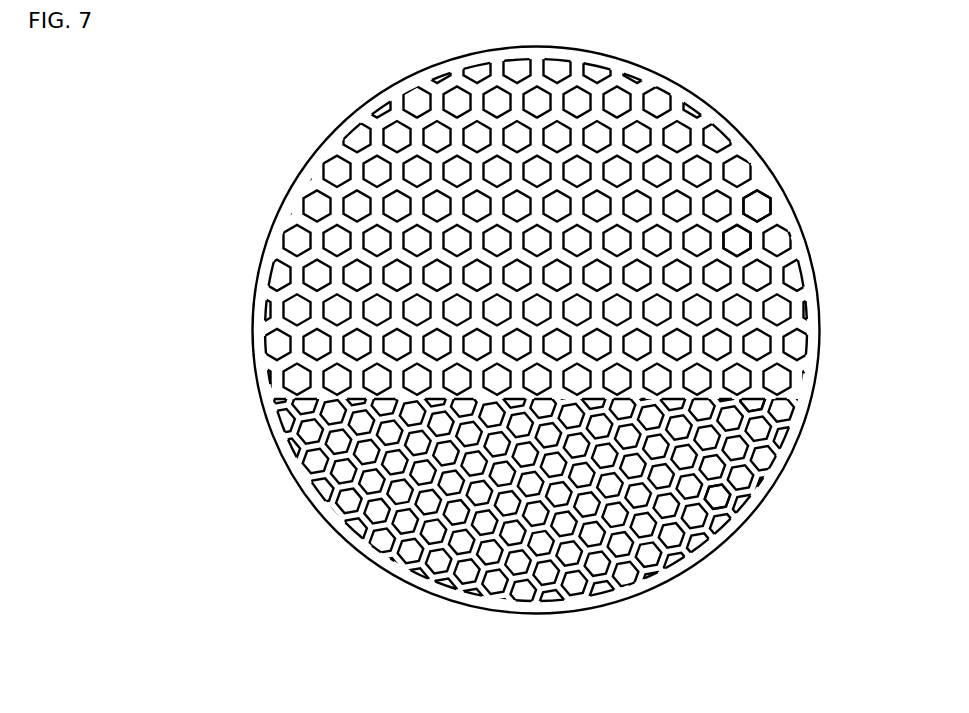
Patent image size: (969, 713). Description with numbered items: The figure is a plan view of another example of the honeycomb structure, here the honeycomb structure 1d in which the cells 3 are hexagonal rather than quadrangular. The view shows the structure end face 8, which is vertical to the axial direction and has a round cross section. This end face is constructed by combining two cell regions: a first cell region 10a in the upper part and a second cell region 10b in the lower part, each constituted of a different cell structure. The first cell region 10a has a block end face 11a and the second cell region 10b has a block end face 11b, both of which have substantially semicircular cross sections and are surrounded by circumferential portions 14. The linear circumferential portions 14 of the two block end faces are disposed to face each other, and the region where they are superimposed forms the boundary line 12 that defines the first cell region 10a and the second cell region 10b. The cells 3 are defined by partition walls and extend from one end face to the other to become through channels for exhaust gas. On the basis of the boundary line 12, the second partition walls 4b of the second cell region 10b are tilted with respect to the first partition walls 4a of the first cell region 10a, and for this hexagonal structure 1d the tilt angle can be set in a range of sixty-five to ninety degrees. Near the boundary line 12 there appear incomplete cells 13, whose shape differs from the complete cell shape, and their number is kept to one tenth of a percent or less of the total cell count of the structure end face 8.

The honeycomb structure 1d is at (157, 203).
The circumferential portions 14 is at (675, 90).
The structure end face 8 is at (521, 356).
The first cell region 10a is at (240, 304).
The block end face 11a is at (713, 158).
The cells 3 is at (743, 195).
The first partition walls 4a is at (750, 240).
The second cell region 10b is at (253, 481).
The block end face 11b is at (658, 553).
The boundary line 12 is at (745, 403).
The incomplete cells 13 is at (752, 409).
The second partition walls 4b is at (727, 495).